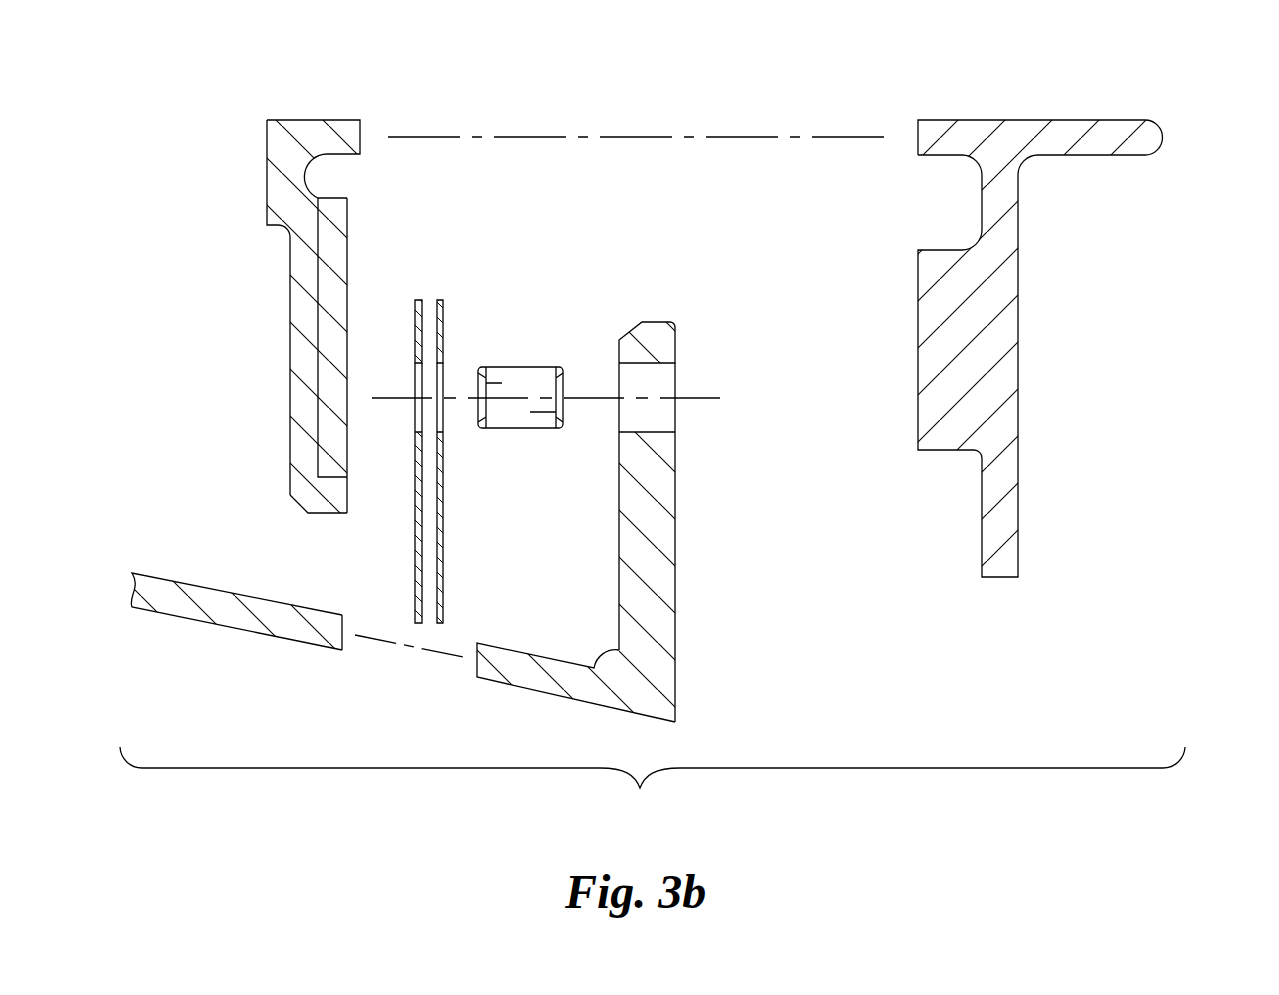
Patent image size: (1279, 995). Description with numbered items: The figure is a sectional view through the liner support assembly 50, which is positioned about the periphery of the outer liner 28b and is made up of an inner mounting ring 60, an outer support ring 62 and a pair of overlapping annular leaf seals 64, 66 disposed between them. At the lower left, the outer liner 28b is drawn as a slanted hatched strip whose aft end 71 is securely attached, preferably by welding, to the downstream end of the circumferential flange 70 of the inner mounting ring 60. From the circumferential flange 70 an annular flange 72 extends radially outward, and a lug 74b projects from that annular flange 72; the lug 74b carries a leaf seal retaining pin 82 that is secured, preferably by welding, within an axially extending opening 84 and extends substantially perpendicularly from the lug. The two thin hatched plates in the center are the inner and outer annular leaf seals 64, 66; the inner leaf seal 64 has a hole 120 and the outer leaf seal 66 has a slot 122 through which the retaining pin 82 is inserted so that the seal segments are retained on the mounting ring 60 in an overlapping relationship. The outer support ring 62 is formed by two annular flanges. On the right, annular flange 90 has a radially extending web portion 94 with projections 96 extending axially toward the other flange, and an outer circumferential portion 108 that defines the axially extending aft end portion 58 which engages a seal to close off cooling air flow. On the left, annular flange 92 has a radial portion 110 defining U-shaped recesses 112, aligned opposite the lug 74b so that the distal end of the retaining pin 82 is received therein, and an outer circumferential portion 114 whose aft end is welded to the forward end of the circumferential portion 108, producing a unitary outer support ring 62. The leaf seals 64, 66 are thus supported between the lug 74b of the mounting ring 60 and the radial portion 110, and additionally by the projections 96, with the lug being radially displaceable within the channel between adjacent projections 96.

The outer liner 28b is at (263, 651).
The liner support assembly 50 is at (1228, 213).
The aft end portion 58 is at (1148, 120).
The inner mounting ring 60 is at (622, 522).
The outer support ring 62 is at (243, 277).
The inner annular leaf seal 64 is at (476, 461).
The outer annular leaf seal 66 is at (380, 461).
The circumferential flange 70 is at (558, 698).
The aft end 71 is at (343, 637).
The annular flange 72 is at (688, 542).
The lug 74b is at (675, 567).
The leaf seal retaining pin 82 is at (531, 367).
The axially extending opening 84 is at (665, 377).
The annular flange 90 is at (1064, 310).
The annular flange 92 is at (283, 393).
The web portion 94 is at (1018, 290).
The projection 96 is at (950, 452).
The outer circumferential portion 108 is at (1050, 120).
The radial portion 110 is at (290, 277).
The recess 112 is at (314, 336).
The outer circumferential portion 114 is at (350, 120).
The hole 120 is at (443, 363).
The slot 122 is at (415, 363).